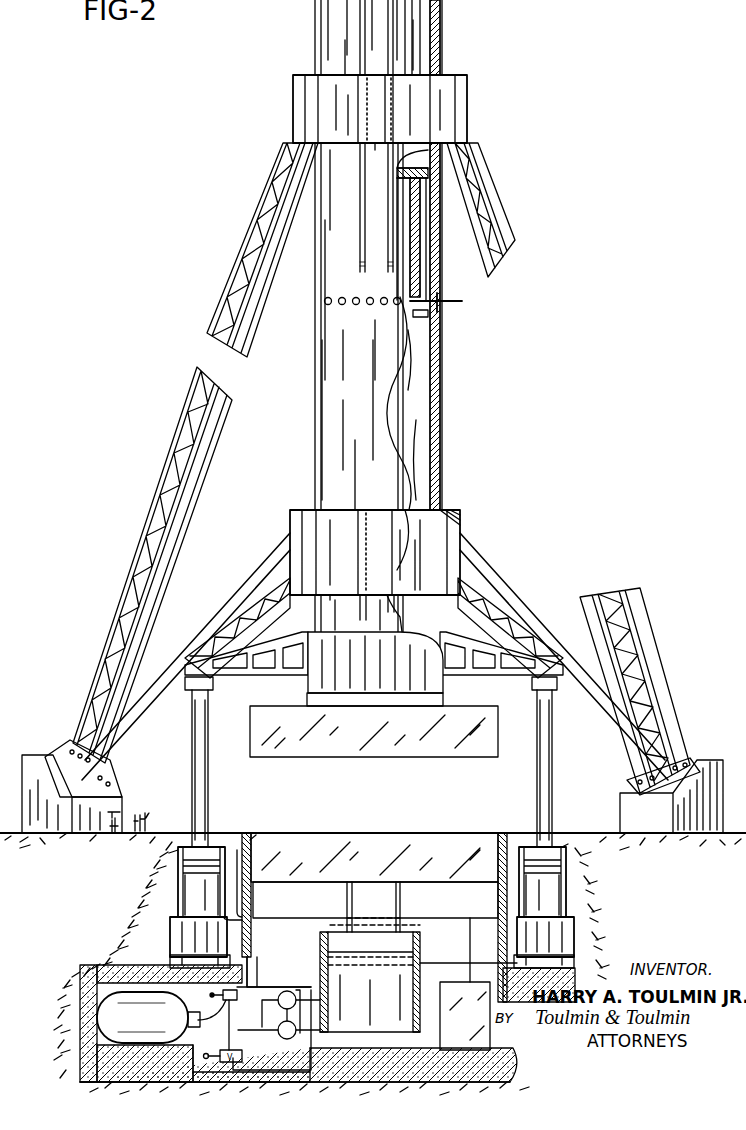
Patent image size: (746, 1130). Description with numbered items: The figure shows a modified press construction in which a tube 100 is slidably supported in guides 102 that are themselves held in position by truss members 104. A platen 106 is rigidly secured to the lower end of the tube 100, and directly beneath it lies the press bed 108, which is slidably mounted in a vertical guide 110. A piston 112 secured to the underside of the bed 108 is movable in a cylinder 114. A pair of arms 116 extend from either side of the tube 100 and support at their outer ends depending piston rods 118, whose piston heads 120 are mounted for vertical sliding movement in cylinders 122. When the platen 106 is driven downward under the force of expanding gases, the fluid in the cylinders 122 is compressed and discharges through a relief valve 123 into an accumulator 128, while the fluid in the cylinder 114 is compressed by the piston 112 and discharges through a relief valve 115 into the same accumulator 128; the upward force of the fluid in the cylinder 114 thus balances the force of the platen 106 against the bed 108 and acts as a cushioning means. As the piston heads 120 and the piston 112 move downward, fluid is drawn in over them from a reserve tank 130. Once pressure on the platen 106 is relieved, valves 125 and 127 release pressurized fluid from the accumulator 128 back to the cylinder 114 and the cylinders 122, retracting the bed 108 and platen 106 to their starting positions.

The tube 100 is at (332, 383).
The guides 102 is at (308, 82).
The truss members 104 is at (220, 603).
The platen 106 is at (367, 752).
The press bed 108 is at (345, 840).
The vertical guide 110 is at (249, 842).
The piston 112 is at (347, 893).
The cylinder 114 is at (328, 1012).
The relief valve 115 is at (290, 1040).
The arms 116 is at (240, 676).
The piston rods 118 is at (208, 782).
The piston heads 120 is at (190, 880).
The cylinders 122 is at (190, 923).
The relief valve 123 is at (288, 991).
The valve 125 is at (248, 987).
The valve 127 is at (212, 995).
The accumulator 128 is at (110, 1012).
The reserve tank 130 is at (453, 985).